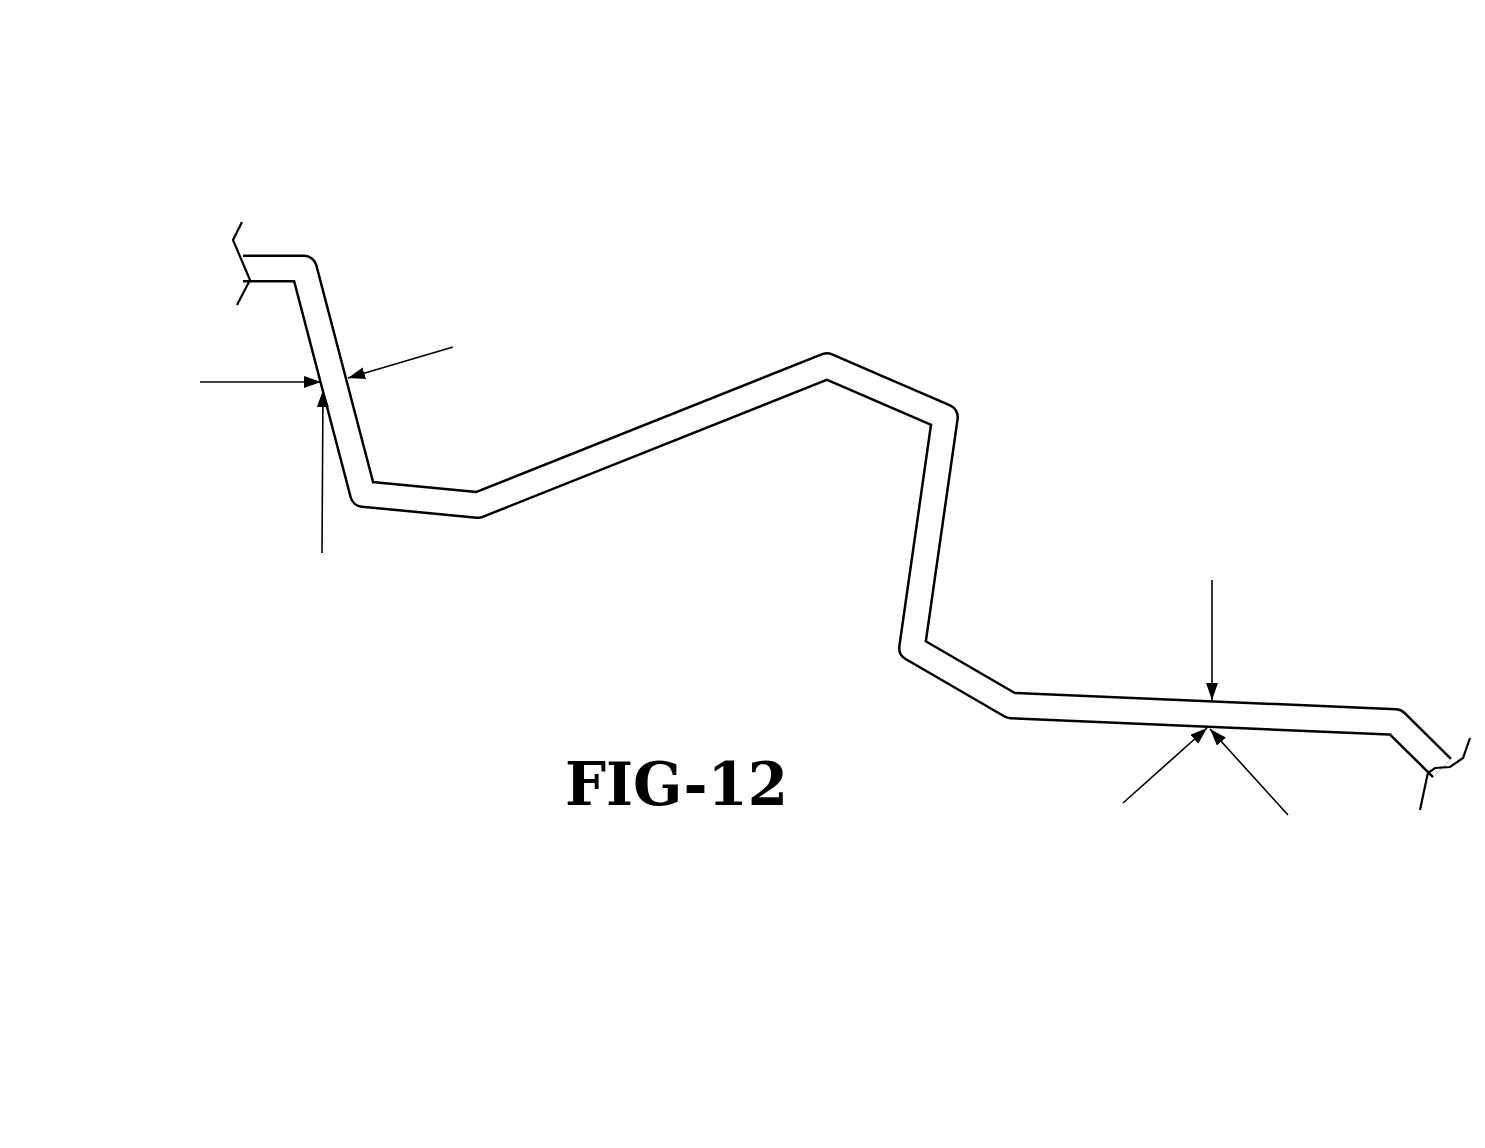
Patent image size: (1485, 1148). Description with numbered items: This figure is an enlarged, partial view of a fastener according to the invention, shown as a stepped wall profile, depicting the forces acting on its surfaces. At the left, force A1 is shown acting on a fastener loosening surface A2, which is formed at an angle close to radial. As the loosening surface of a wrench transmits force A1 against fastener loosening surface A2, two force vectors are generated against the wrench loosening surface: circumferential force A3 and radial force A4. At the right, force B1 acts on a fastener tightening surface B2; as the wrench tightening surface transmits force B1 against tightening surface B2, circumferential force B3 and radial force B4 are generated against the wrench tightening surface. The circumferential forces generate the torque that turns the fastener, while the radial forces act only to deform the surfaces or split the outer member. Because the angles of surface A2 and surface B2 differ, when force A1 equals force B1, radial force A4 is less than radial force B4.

The force A1 is at (417, 357).
The fastener loosening surface A2 is at (330, 318).
The circumferential force A3 is at (250, 383).
The radial force A4 is at (322, 473).
The force B1 is at (1208, 620).
The fastener tightening surface B2 is at (1293, 702).
The circumferential force B3 is at (1255, 783).
The radial force B4 is at (1150, 780).